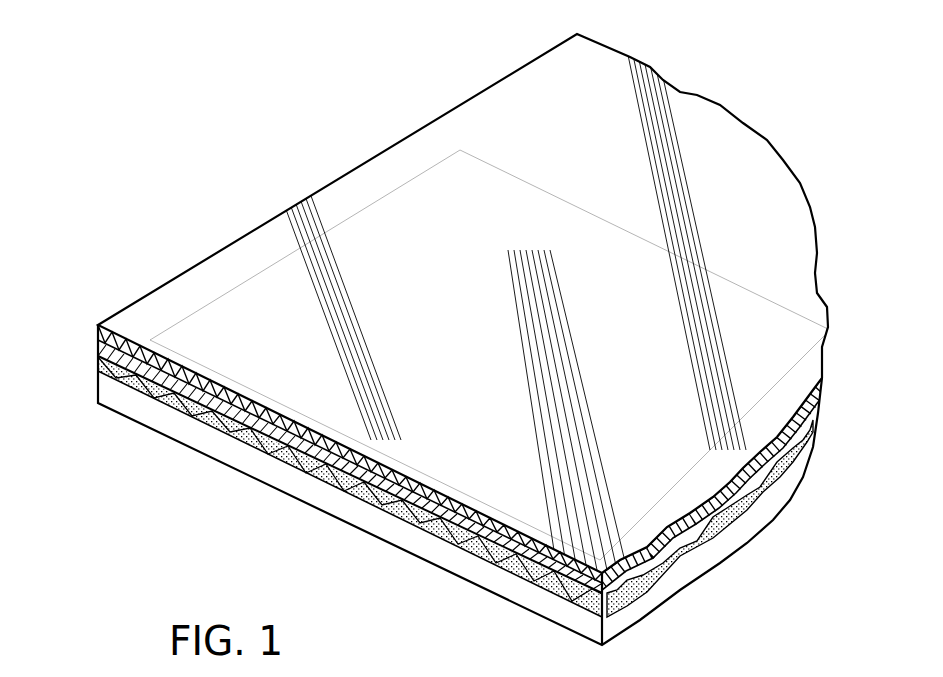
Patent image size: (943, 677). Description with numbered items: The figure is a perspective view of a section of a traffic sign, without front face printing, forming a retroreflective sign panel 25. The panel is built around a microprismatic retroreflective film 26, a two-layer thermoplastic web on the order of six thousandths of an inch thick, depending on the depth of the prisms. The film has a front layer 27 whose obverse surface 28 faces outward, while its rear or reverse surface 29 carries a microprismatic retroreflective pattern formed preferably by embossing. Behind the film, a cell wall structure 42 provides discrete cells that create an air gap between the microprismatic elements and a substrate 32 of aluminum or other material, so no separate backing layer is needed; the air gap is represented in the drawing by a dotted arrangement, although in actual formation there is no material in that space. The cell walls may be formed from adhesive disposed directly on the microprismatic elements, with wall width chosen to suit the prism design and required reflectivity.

The retroreflective sign panel 25 is at (437, 157).
The microprismatic retroreflective film 26 is at (97, 341).
The front layer 27 is at (97, 332).
The obverse surface 28 is at (148, 305).
The reverse surface 29 is at (210, 418).
The substrate 32 is at (532, 600).
The cell wall structure 42 is at (425, 521).